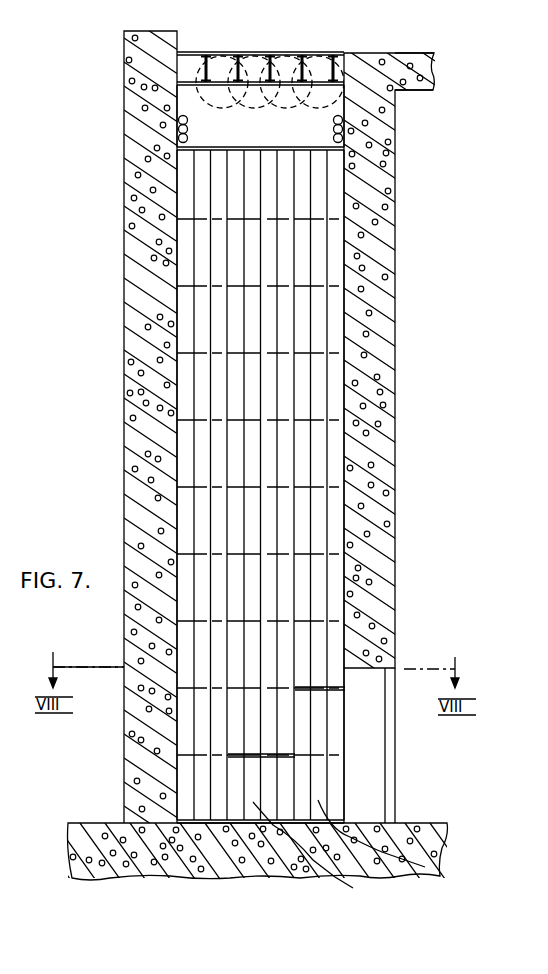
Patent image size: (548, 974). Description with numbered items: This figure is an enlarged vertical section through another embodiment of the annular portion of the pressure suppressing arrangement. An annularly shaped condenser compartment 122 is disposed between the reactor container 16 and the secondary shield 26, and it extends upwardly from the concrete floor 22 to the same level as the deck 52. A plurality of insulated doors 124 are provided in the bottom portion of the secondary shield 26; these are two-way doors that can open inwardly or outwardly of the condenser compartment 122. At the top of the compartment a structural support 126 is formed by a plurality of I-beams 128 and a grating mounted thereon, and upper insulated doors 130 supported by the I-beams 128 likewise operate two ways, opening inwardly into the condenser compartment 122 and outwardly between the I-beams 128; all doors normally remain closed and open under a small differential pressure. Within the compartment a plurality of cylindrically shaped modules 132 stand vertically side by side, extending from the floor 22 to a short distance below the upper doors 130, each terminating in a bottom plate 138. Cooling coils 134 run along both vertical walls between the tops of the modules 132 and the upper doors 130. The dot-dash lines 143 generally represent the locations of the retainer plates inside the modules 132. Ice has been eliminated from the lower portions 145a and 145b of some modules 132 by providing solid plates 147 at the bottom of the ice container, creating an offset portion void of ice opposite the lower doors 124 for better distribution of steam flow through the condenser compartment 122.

The reactor container 16 is at (130, 388).
The secondary shield 26 is at (383, 297).
The deck 52 is at (422, 56).
The floor 22 is at (98, 848).
The condenser compartment 122 is at (220, 125).
The cooling coils 134 is at (178, 132).
The structural support 126 is at (243, 41).
The I-beams 128 is at (248, 53).
The upper insulated doors 130 is at (313, 87).
The cylindrically shaped modules 132 is at (300, 192).
The dot-dash lines 143 is at (333, 353).
The insulated doors 124 is at (390, 718).
The solid plates 147 is at (320, 690).
The bottom plate 138 is at (345, 822).
The lower portions 145a is at (394, 840).
The lower portion 145b is at (327, 853).